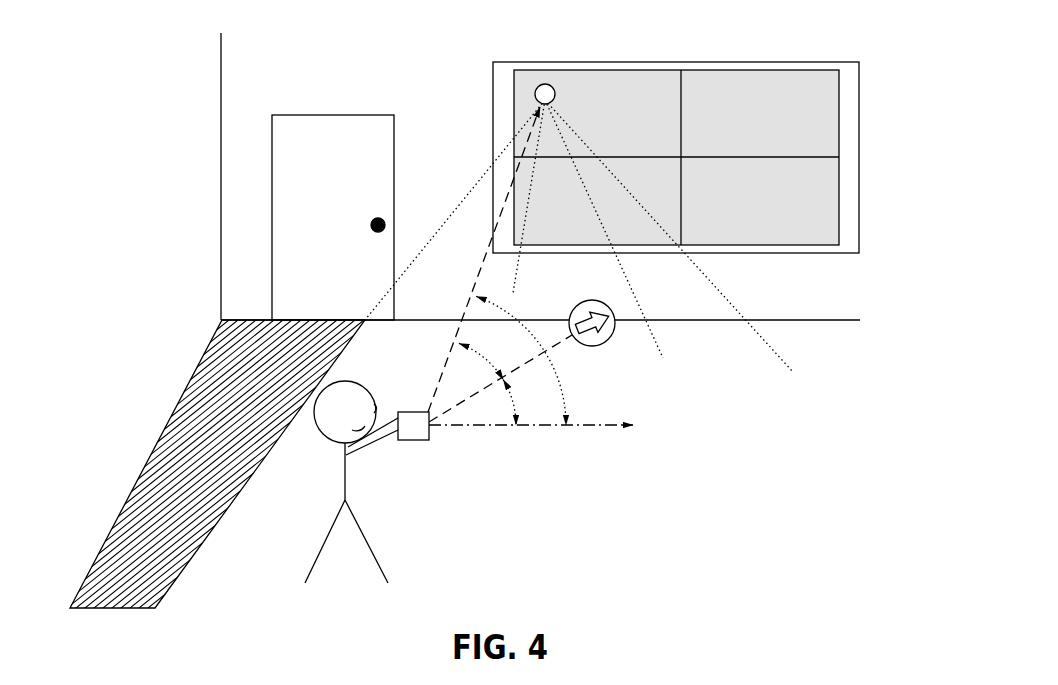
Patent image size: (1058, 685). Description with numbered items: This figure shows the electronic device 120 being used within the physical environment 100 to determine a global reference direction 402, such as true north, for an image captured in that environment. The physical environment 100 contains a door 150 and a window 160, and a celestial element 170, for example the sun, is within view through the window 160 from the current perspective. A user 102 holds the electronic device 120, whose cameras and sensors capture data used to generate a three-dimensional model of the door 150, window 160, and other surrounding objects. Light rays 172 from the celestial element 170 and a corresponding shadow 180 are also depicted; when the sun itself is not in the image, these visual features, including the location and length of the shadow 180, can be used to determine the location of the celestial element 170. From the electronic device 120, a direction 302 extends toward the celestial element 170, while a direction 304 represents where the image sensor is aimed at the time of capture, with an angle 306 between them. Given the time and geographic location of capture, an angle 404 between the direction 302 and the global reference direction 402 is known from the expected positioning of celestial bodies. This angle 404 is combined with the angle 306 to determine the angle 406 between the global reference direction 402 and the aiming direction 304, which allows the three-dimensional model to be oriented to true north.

The physical environment 100 is at (93, 147).
The user 102 is at (336, 496).
The electronic device 120 is at (415, 441).
The door 150 is at (318, 115).
The window 160 is at (860, 128).
The celestial element 170 is at (540, 86).
The light rays 172 is at (465, 187).
The shadow 180 is at (172, 408).
The direction from the electronic device to the celestial element 302 is at (478, 282).
The direction the electronic device is aimed 304 is at (618, 428).
The angle 306 is at (565, 377).
The global reference direction 402 is at (590, 302).
The angle 404 is at (455, 340).
The angle 406 is at (513, 430).